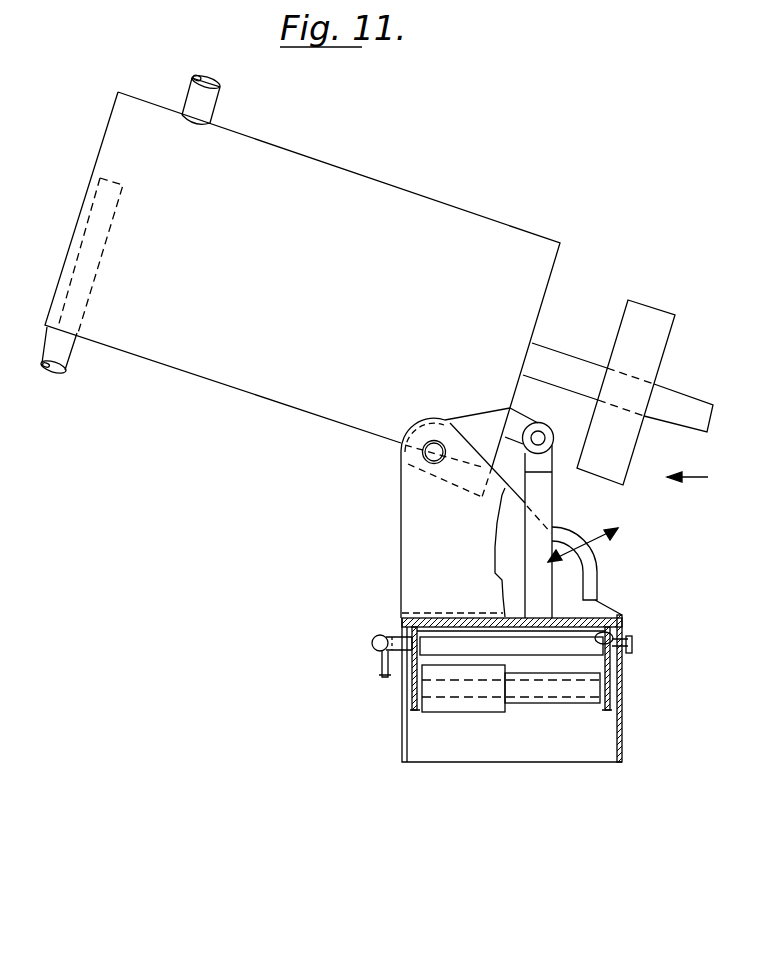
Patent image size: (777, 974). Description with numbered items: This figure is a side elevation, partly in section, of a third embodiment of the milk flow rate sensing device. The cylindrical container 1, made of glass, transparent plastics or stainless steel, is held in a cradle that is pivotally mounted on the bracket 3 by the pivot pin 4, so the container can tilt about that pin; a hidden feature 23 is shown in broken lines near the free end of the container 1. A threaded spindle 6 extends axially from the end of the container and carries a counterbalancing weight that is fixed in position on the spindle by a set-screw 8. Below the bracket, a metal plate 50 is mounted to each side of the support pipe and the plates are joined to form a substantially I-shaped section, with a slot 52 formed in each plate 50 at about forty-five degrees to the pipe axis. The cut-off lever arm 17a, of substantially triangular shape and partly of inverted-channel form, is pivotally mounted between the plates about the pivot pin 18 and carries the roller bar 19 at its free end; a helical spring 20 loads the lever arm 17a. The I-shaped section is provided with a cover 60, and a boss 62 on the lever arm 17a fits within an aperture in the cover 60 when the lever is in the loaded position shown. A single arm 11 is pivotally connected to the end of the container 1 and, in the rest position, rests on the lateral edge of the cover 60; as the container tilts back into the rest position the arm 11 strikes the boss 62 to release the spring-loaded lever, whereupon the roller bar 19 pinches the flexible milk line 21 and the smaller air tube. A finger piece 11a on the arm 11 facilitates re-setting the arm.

The cylindrical container 1 is at (373, 180).
The flexible milk line 21 is at (208, 106).
The hidden slot 23 is at (88, 290).
The set-screw 8 is at (650, 304).
The threaded spindle 6 is at (678, 394).
The pivot pin 4 is at (423, 455).
The bracket 3 is at (404, 558).
The arm 11 is at (543, 597).
The finger piece 11a is at (593, 563).
The boss 62 is at (535, 617).
The metal plate 50 is at (402, 733).
The lever arm 17a is at (418, 704).
The pivot pin 18 is at (558, 650).
The roller bar 19 is at (495, 708).
The helical spring 20 is at (372, 645).
The slot 52 is at (380, 670).
The cover 60 is at (623, 640).